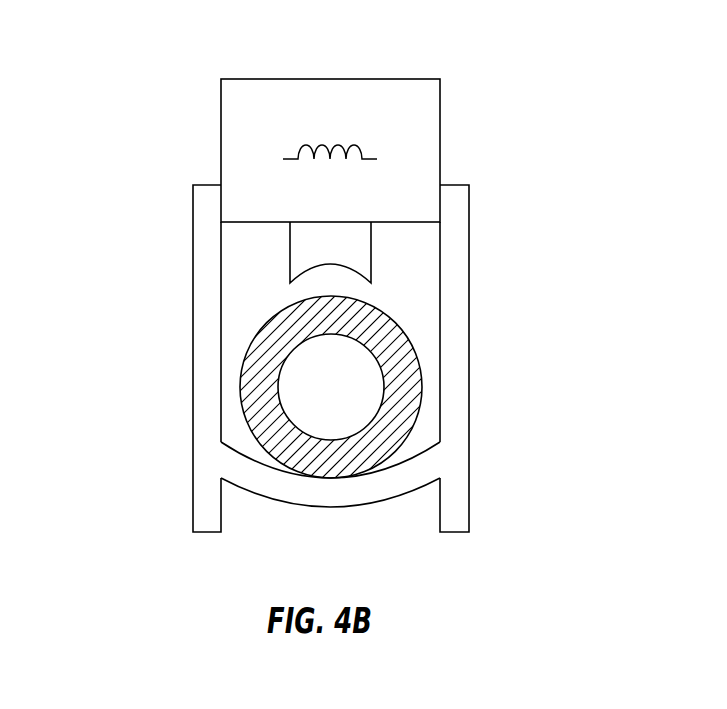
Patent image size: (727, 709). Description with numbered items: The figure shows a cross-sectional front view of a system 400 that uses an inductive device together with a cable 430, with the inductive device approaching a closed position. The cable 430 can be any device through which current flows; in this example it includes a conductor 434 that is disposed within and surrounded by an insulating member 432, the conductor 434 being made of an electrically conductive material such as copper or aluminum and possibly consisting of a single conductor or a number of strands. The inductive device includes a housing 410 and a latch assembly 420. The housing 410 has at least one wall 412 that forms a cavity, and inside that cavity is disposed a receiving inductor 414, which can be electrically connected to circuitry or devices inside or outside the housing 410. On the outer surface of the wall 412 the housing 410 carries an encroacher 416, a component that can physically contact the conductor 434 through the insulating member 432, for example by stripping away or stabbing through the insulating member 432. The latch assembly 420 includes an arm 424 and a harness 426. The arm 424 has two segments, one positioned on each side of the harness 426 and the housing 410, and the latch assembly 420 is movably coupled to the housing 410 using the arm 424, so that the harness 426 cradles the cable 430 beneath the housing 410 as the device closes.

The system 400 is at (485, 60).
The housing 410 is at (207, 60).
The wall 412 is at (330, 79).
The receiving inductor 414 is at (352, 142).
The encroacher 416 is at (372, 253).
The latch assembly 420 is at (172, 445).
The arm 424 is at (205, 360).
The harness 426 is at (330, 492).
The cable 430 is at (332, 359).
The insulating member 432 is at (402, 392).
The conductor 434 is at (353, 398).